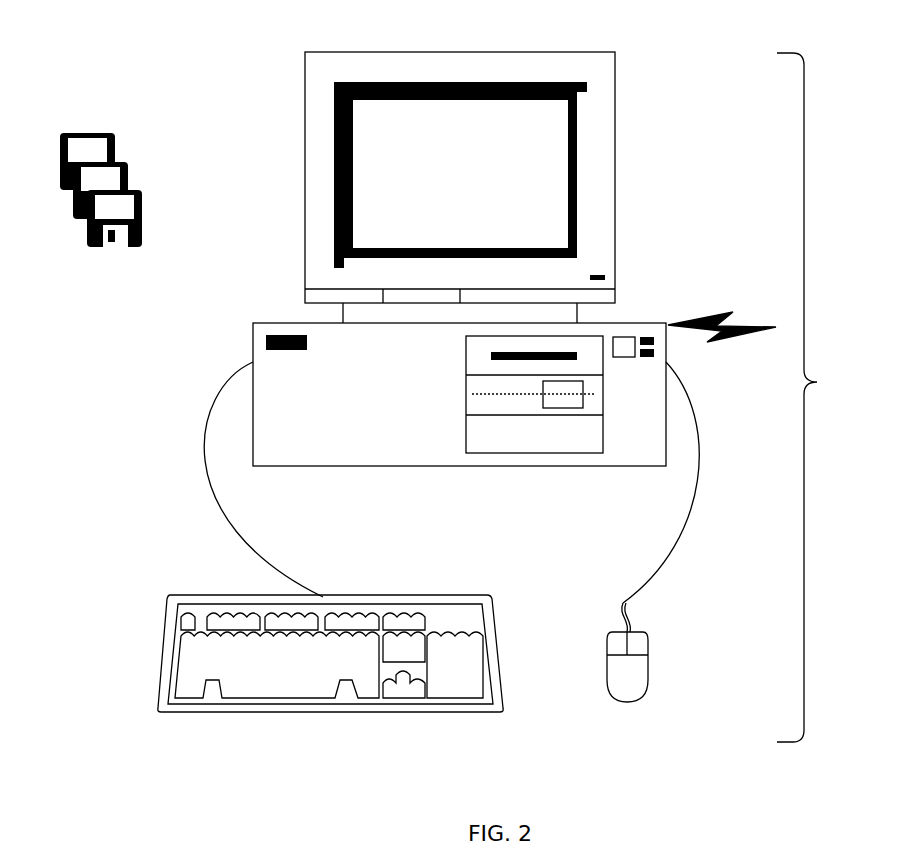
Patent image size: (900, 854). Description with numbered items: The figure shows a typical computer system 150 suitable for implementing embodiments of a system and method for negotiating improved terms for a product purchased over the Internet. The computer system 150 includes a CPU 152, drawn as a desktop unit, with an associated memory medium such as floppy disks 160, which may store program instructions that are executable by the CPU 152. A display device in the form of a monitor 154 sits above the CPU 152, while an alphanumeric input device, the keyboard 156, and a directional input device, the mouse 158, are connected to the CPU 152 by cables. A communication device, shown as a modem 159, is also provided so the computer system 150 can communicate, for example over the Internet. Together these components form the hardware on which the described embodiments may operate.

The computer system 150 is at (829, 397).
The CPU 152 is at (459, 394).
The monitor 154 is at (460, 187).
The keyboard 156 is at (330, 553).
The mouse 158 is at (653, 547).
The modem 159 is at (722, 342).
The floppy disks 160 is at (101, 205).